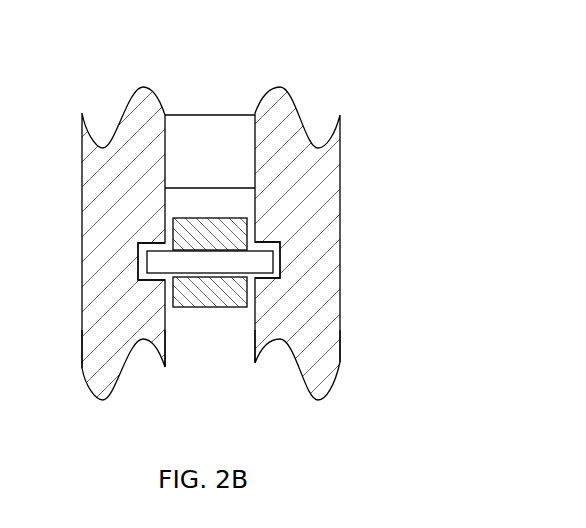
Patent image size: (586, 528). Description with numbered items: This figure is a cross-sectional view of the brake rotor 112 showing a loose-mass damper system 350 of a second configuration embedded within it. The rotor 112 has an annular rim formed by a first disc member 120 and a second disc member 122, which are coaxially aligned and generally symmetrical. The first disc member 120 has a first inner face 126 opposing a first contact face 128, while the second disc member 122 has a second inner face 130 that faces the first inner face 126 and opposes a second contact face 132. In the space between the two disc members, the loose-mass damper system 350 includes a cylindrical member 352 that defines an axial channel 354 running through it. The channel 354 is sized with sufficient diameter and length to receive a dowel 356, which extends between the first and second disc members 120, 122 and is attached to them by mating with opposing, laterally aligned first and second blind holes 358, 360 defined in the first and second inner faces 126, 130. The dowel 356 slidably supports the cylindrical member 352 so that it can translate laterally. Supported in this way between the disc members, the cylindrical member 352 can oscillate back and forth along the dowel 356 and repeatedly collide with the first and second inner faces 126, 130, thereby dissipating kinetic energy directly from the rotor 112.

The brake rotor 112 is at (372, 180).
The first disc member 120 is at (122, 127).
The second disc member 122 is at (303, 123).
The first inner face 126 is at (167, 350).
The first contact face 128 is at (80, 350).
The second inner face 130 is at (253, 358).
The second contact face 132 is at (343, 358).
The loose-mass damper system 350 is at (215, 100).
The cylindrical member 352 is at (232, 217).
The axial channel 354 is at (185, 257).
The dowel 356 is at (270, 262).
The first blind hole 358 is at (139, 255).
The second blind hole 360 is at (270, 248).